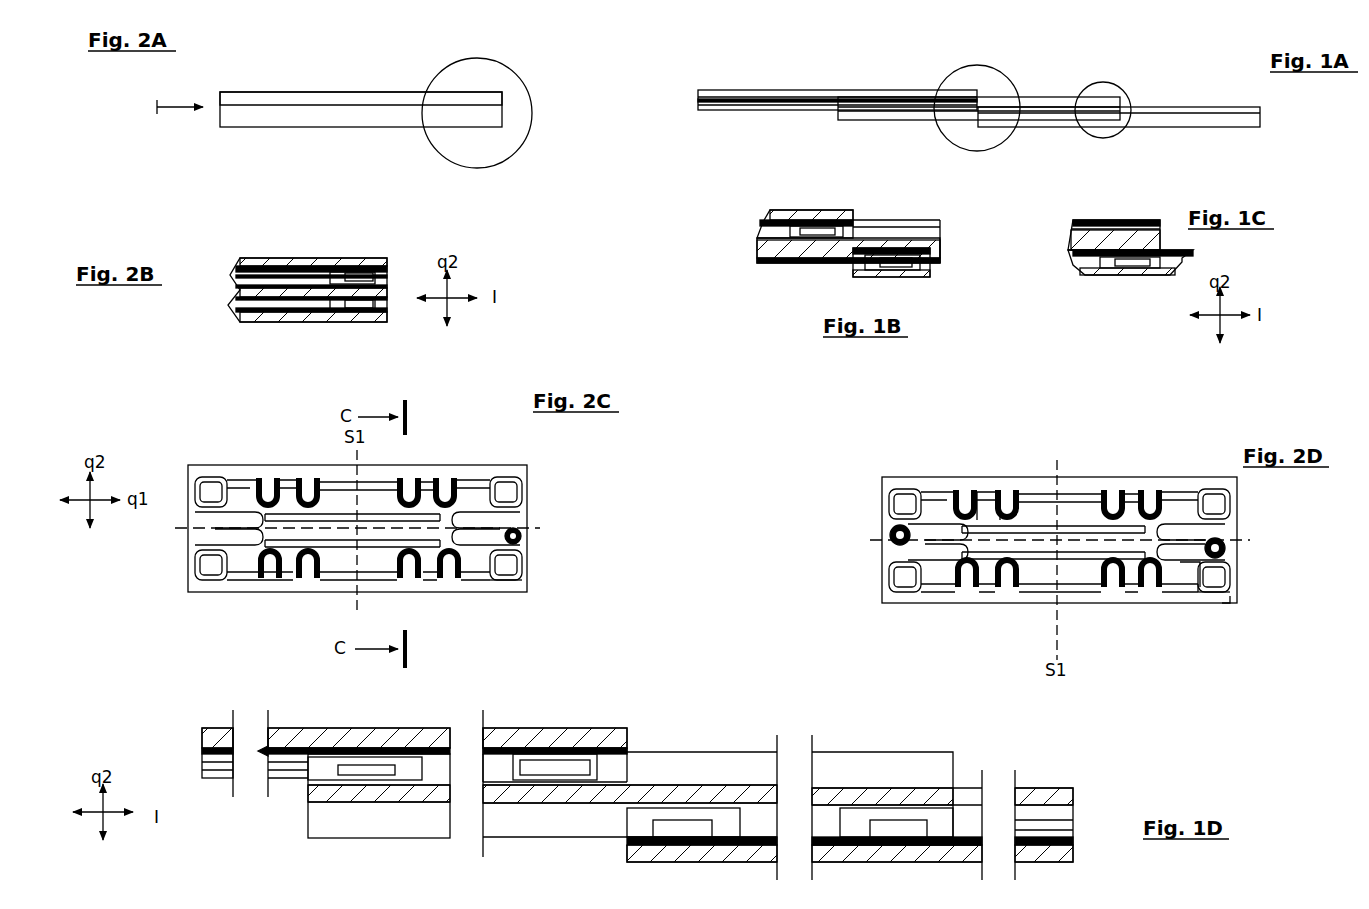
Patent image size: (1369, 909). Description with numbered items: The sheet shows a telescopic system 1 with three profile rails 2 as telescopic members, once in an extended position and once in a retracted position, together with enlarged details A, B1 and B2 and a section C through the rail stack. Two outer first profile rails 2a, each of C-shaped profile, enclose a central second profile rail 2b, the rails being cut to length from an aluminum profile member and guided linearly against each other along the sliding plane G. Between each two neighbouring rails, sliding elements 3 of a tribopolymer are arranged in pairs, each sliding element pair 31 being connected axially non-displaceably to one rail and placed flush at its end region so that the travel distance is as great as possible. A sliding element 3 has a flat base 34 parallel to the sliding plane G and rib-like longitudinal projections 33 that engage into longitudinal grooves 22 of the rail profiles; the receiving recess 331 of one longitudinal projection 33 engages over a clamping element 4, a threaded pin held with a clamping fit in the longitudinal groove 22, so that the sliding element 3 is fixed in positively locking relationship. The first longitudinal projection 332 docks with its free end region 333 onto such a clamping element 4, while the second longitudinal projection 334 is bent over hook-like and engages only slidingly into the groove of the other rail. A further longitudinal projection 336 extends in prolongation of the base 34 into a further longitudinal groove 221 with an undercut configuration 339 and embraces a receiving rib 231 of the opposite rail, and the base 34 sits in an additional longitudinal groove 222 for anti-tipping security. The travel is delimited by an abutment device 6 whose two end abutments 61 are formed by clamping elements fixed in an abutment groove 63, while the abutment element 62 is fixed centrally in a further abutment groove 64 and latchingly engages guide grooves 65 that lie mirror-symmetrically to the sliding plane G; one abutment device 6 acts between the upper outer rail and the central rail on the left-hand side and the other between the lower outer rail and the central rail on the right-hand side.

In FIG. 2A, the telescopic system 1 is at (315, 72).
In FIG. 1A, the telescopic system 1 is at (810, 68).
In FIG. 1B, the telescopic system 1 is at (813, 207).
In FIG. 2C, the telescopic system 1 is at (176, 440).
In FIG. 2D, the telescopic system 1 is at (890, 462).
In FIG. 1D, the telescopic system 1 is at (193, 698).
In FIG. 2A, the profile rail 2 is at (236, 97).
In FIG. 1A, the profile rail 2 is at (737, 93).
In FIG. 2A, the first profile rail 2a is at (292, 93).
In FIG. 1A, the first profile rail 2a is at (712, 97).
In FIG. 1B, the first profile rail 2a is at (930, 272).
In FIG. 1C, the first profile rail 2a is at (1196, 252).
In FIG. 2B, the first profile rail 2a is at (246, 262).
In FIG. 2C, the first profile rail 2a is at (188, 578).
In FIG. 1D, the first profile rail 2a is at (645, 810).
In FIG. 1A, the second profile rail 2b is at (851, 100).
In FIG. 1B, the second profile rail 2b is at (762, 240).
In FIG. 1C, the second profile rail 2b is at (1160, 224).
In FIG. 2B, the second profile rail 2b is at (267, 280).
In FIG. 2C, the second profile rail 2b is at (268, 488).
In FIG. 1D, the second profile rail 2b is at (695, 750).
In FIG. 1B, the sliding element 3 is at (858, 270).
In FIG. 1C, the sliding element 3 is at (1112, 272).
In FIG. 2B, the sliding element 3 is at (335, 302).
In FIG. 2C, the sliding element 3 is at (216, 580).
In FIG. 2D, the sliding element 3 is at (900, 500).
In FIG. 1D, the sliding element 3 is at (388, 740).
In FIG. 1B, the clamping element 4 is at (880, 261).
In FIG. 1C, the clamping element 4 is at (1135, 263).
In FIG. 2B, the clamping element 4 is at (360, 276).
In FIG. 1D, the clamping element 4 is at (558, 763).
In FIG. 2C, the abutment device 6 is at (516, 536).
In FIG. 2D, the abutment device 6 is at (1008, 492).
In FIG. 2C, the longitudinal groove 22 is at (405, 575).
In FIG. 2C, the additional longitudinal groove 222 is at (268, 578).
In FIG. 2D, the sliding element pair 31 is at (895, 490).
In FIG. 1D, the longitudinal projection 33 is at (330, 747).
In FIG. 1D, the receiving recess 331 is at (356, 762).
In FIG. 2D, the first longitudinal projection 332 is at (963, 490).
In FIG. 2D, the free end region 333 is at (1000, 492).
In FIG. 2D, the second longitudinal projection 334 is at (1033, 492).
In FIG. 2D, the base 34 is at (1132, 592).
In FIG. 2D, the end abutment 61 is at (1228, 548).
In FIG. 2D, the abutment element 62 is at (1227, 502).
In FIG. 2C, the abutment groove 63 is at (505, 552).
In FIG. 2C, the further abutment groove 64 is at (500, 572).
In FIG. 2D, the guide groove 65 is at (1175, 592).
In FIG. 2D, the further longitudinal groove 221 is at (1230, 600).
In FIG. 2D, the receiving rib 231 is at (1212, 596).
In FIG. 2D, the further longitudinal projection 336 is at (1228, 585).
In FIG. 2D, the undercut configuration 339 is at (1227, 562).
In FIG. 2A, the detail A is at (522, 78).
In FIG. 2B, the detail A is at (396, 268).
In FIG. 1A, the detail B1 is at (1003, 73).
In FIG. 1B, the detail B1 is at (905, 221).
In FIG. 1A, the detail B2 is at (1099, 81).
In FIG. 1C, the detail B2 is at (1108, 216).
In FIG. 2B, the section C is at (334, 256).
In FIG. 1D, the section C is at (749, 723).
In FIG. 2C, the sliding plane G is at (382, 528).
In FIG. 2D, the sliding plane G is at (872, 535).